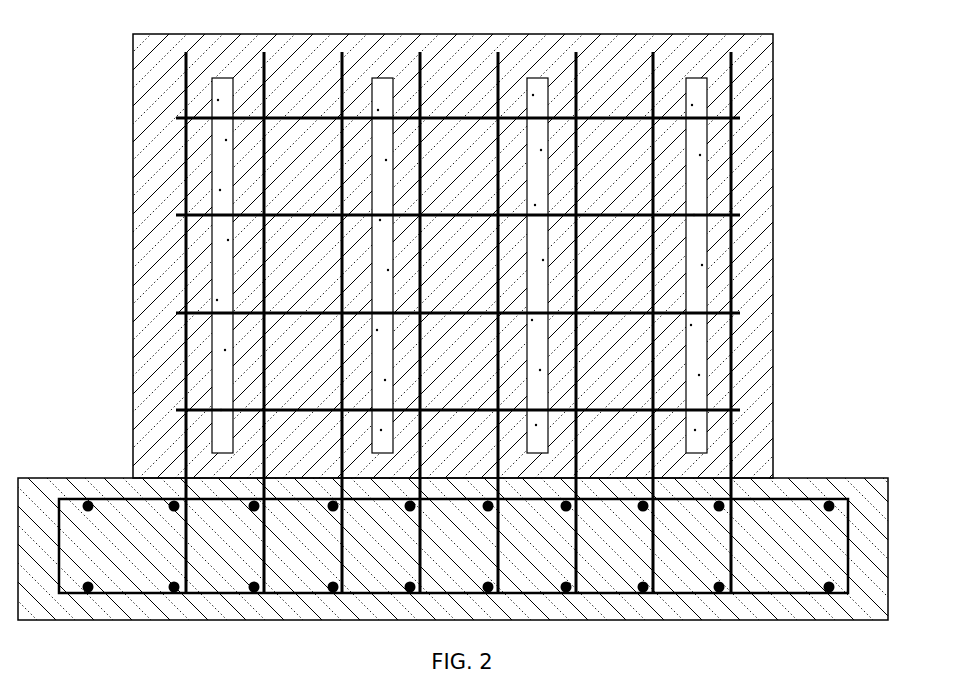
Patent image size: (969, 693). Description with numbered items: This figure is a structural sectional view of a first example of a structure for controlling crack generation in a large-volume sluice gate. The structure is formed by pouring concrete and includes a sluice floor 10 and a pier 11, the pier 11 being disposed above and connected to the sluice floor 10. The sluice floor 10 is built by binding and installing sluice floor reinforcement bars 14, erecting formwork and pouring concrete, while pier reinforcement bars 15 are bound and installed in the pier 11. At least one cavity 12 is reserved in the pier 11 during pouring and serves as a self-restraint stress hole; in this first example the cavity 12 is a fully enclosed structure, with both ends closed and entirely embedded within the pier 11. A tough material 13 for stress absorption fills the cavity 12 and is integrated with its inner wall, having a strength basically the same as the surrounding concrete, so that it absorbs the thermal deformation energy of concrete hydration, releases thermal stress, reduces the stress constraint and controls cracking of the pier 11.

The sluice floor 10 is at (867, 483).
The pier 11 is at (832, 308).
The cavity 12 is at (207, 195).
The tough material 13 is at (220, 100).
The sluice floor reinforcement bars 14 is at (62, 490).
The pier reinforcement bars 15 is at (185, 335).